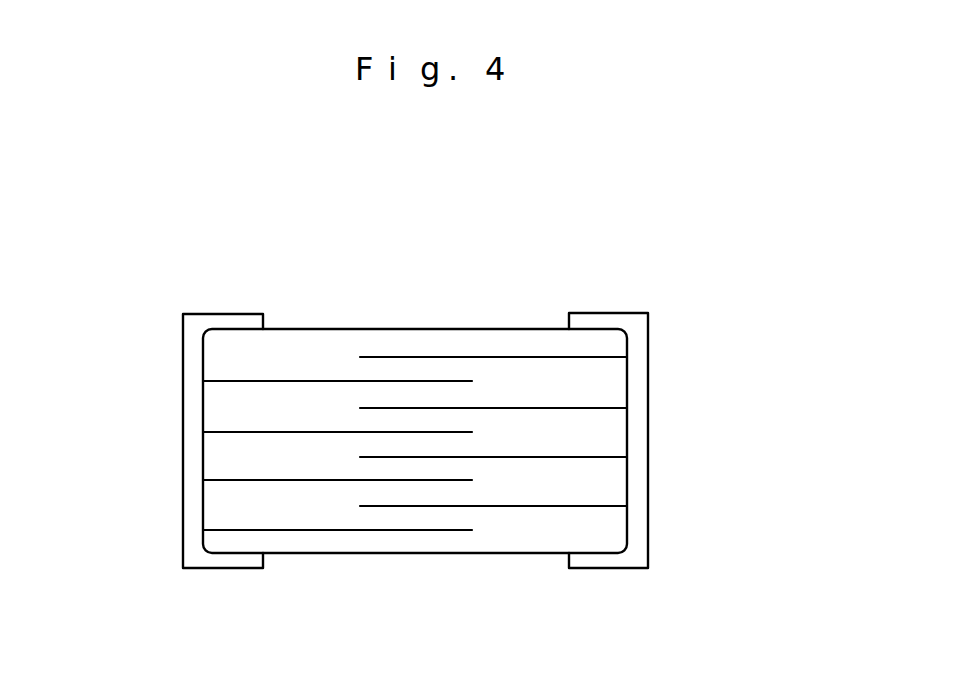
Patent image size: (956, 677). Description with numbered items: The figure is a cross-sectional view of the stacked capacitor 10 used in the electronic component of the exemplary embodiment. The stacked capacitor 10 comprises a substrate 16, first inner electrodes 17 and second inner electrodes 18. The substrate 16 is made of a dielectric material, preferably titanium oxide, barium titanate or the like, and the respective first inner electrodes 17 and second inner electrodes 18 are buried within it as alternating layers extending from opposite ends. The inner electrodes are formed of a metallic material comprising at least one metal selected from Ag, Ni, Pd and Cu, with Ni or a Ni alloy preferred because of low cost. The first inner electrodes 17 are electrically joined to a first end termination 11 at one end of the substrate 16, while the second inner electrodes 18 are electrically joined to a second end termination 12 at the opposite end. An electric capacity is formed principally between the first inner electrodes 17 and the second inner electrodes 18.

The stacked capacitor 10 is at (420, 414).
The first end termination 11 is at (188, 430).
The second end termination 12 is at (633, 335).
The substrate 16 is at (315, 342).
The first inner electrode 17 is at (440, 357).
The second inner electrode 18 is at (225, 380).